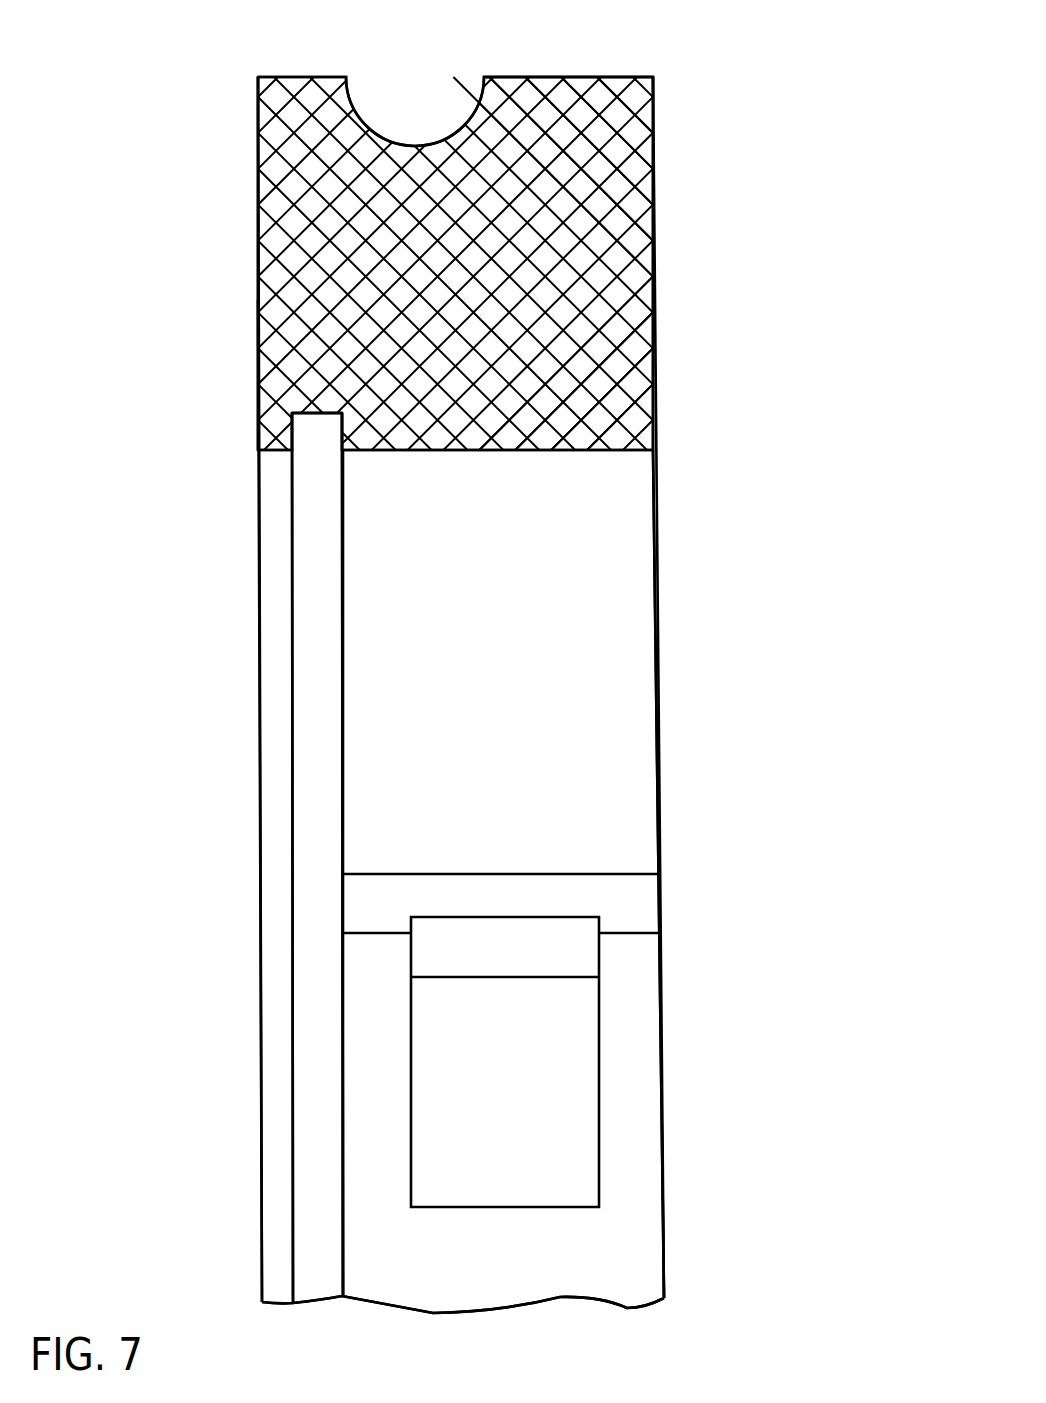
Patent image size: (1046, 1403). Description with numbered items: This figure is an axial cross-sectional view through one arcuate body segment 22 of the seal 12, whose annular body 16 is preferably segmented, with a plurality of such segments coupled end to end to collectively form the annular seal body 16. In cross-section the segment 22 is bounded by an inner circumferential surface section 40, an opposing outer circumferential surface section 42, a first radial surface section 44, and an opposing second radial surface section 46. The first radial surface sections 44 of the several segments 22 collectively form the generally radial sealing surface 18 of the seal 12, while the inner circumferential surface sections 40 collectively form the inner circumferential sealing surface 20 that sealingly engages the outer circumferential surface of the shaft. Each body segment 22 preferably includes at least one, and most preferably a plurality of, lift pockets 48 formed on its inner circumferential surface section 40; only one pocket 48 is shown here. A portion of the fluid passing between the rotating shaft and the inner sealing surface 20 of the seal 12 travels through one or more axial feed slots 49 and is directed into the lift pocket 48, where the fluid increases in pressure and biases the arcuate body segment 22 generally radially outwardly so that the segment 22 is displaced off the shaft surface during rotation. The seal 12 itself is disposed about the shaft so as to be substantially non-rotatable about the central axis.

The seal 12 is at (135, 301).
The annular body 16 is at (228, 194).
The radial sealing surface 18 is at (248, 378).
The sealing surface 20 is at (611, 728).
The arcuate body segment 22 is at (647, 295).
The inner circumferential surface section 40 is at (620, 627).
The outer circumferential surface section 42 is at (553, 77).
The first radial surface section 44 is at (258, 268).
The second radial surface section 46 is at (655, 193).
The lift pocket 48 is at (585, 1115).
The axial feed slot 49 is at (638, 907).